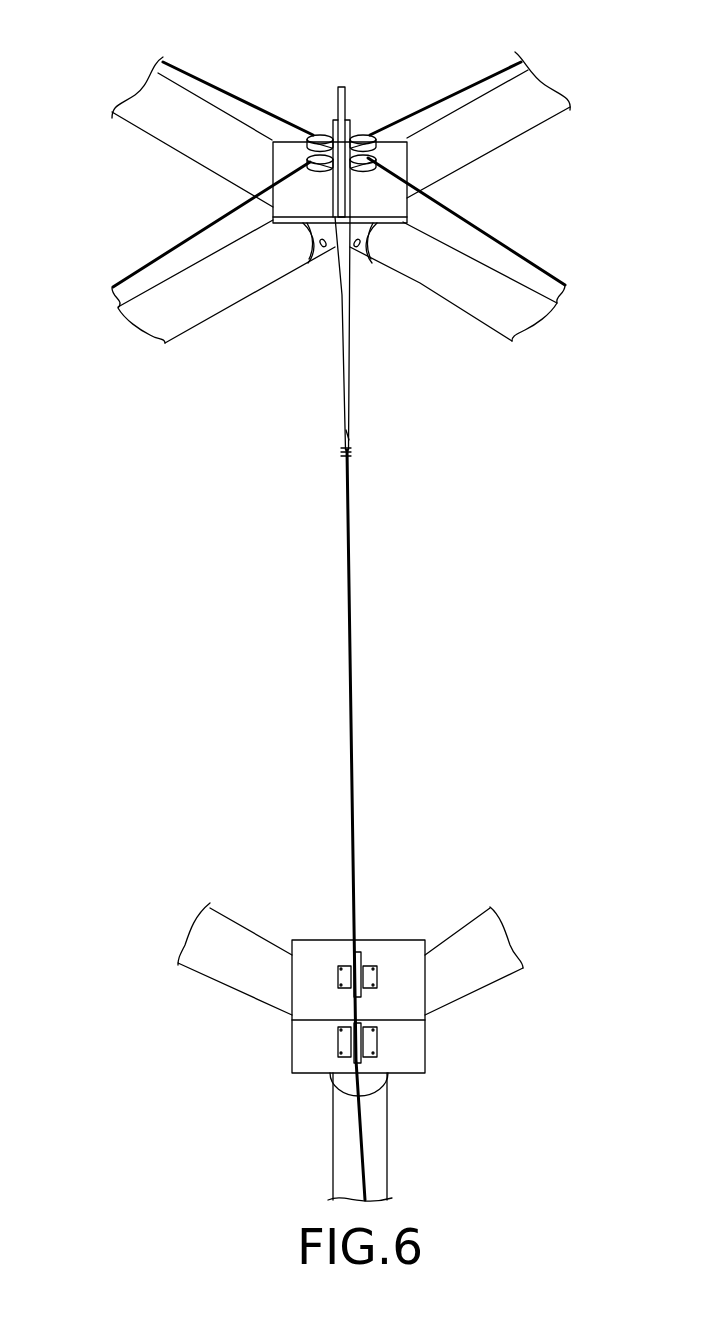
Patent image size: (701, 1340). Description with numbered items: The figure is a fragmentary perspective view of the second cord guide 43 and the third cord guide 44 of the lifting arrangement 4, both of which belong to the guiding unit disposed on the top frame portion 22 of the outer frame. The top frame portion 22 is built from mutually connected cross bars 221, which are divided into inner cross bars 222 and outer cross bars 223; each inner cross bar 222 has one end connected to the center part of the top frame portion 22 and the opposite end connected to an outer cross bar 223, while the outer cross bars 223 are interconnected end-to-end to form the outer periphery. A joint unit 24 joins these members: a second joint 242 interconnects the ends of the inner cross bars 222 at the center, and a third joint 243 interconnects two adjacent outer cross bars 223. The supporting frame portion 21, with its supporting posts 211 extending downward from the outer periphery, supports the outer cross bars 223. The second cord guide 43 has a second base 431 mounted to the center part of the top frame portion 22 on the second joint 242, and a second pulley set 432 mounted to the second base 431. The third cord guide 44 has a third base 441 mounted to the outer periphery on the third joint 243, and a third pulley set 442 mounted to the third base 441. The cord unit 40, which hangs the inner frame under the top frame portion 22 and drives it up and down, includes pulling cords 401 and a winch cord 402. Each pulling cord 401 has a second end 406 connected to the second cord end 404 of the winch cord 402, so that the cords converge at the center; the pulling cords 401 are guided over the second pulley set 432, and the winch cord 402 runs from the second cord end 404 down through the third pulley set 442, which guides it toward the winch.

The lifting unit 4 is at (336, 825).
The cord unit 40 is at (339, 228).
The pulling cords 401 is at (215, 215).
The winch cord 402 is at (347, 534).
The second cord end 404 is at (345, 470).
The second end 406 is at (349, 433).
The second pulley set 432 is at (372, 134).
The second cord guide 43 is at (315, 233).
The second base 431 is at (293, 204).
The top frame portion 22 is at (314, 197).
The inner cross bars 222 is at (486, 273).
The joint unit 24 is at (380, 290).
The second joint 242 is at (362, 228).
The cross bars 221 is at (399, 952).
The outer cross bars 223 is at (258, 940).
The third cord guide 44 is at (331, 958).
The third base 441 is at (400, 950).
The third pulley set 442 is at (340, 968).
The third joints 243 is at (342, 1082).
The supporting frame portion 21 is at (438, 1137).
The supporting posts 211 is at (380, 1135).